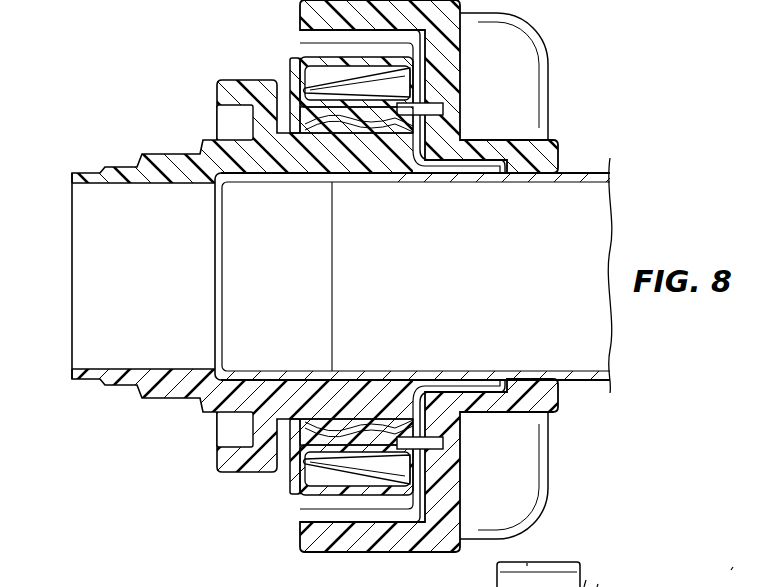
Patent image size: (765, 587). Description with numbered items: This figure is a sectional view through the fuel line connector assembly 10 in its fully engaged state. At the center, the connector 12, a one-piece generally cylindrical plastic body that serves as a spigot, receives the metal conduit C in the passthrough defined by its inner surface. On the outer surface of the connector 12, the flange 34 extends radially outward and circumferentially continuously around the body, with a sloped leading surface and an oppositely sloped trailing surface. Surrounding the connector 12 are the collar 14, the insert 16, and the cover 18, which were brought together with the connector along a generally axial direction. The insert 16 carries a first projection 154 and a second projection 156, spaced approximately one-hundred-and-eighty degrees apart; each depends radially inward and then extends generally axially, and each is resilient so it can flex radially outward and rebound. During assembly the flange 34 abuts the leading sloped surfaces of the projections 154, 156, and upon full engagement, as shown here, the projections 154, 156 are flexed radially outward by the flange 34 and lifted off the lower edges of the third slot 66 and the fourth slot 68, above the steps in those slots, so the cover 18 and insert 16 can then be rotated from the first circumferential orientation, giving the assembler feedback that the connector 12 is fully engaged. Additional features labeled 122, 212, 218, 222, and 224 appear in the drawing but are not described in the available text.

The fuel line connector assembly 10 is at (575, 46).
The connector 12 is at (235, 472).
The collar 14 is at (305, 496).
The insert 16 is at (292, 475).
The cover 18 is at (357, 552).
The flange 34 is at (377, 122).
The third slot 66 is at (425, 107).
The fourth slot 68 is at (425, 447).
The first projection 154 is at (409, 96).
The second projection 156 is at (409, 458).
The metal conduit C is at (586, 381).
The locking element 122 is at (586, 580).
The coupling member 212 is at (764, 548).
The collar 218 is at (497, 575).
The flange 222 is at (598, 584).
The ring 224 is at (527, 563).